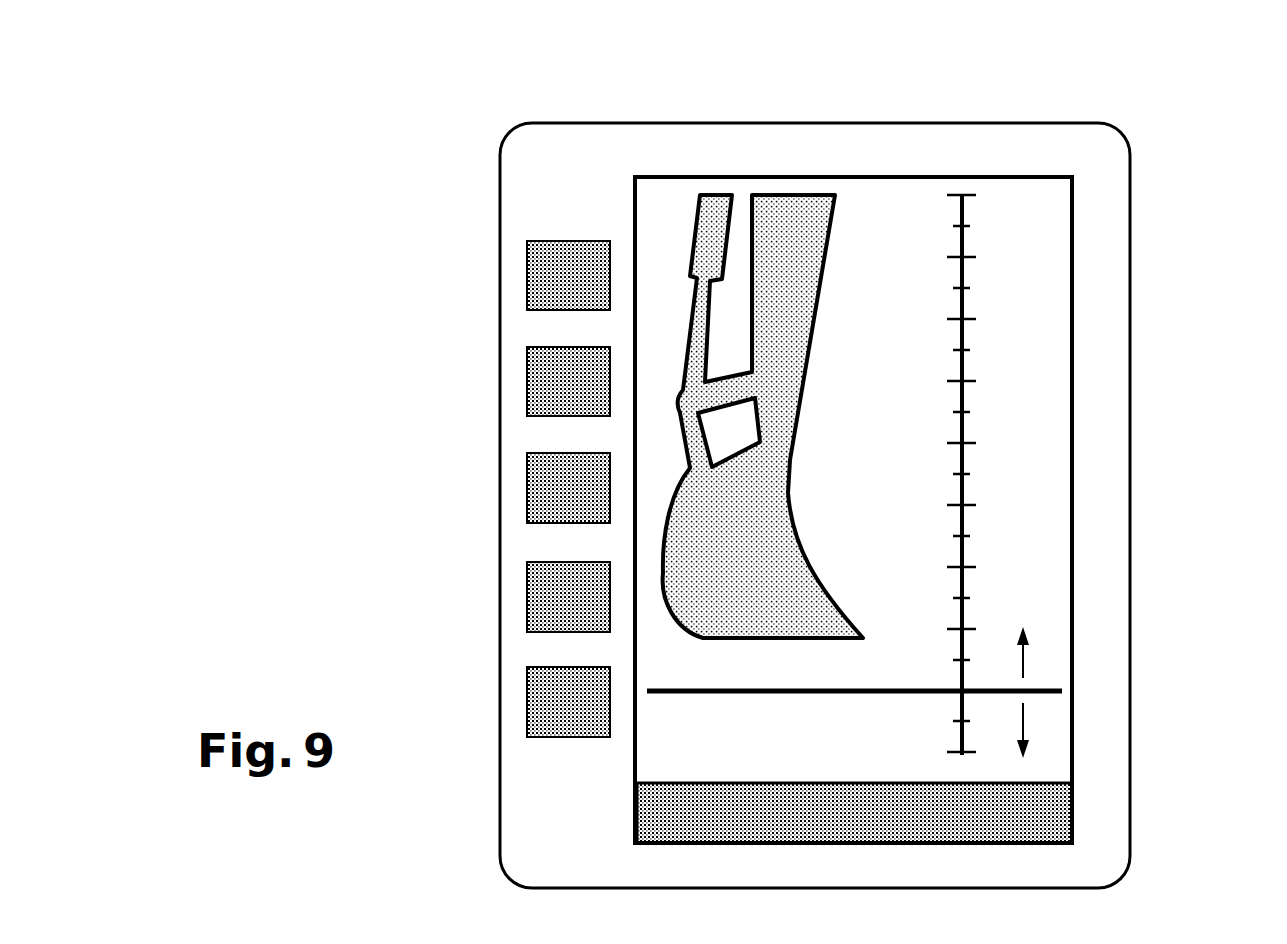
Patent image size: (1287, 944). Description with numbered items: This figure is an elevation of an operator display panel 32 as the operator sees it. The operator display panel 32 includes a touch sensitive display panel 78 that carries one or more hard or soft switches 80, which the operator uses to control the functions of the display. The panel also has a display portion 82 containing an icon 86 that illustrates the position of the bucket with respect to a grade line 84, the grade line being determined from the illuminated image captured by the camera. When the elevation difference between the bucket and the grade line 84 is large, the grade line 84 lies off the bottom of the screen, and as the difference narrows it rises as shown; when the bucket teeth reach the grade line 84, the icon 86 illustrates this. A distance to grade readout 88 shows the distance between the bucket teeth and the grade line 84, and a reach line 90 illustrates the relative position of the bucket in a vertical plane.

The operator display panel 32 is at (1120, 131).
The touch sensitive display panel 78 is at (1130, 210).
The switches 80 is at (526, 288).
The display portion 82 is at (1072, 337).
The grade line 84 is at (1045, 688).
The icon 86 is at (770, 640).
The distance to grade readout 88 is at (1040, 785).
The reach line 90 is at (962, 515).